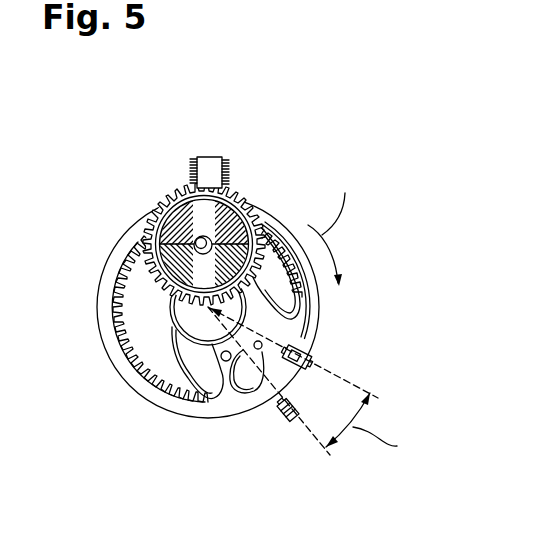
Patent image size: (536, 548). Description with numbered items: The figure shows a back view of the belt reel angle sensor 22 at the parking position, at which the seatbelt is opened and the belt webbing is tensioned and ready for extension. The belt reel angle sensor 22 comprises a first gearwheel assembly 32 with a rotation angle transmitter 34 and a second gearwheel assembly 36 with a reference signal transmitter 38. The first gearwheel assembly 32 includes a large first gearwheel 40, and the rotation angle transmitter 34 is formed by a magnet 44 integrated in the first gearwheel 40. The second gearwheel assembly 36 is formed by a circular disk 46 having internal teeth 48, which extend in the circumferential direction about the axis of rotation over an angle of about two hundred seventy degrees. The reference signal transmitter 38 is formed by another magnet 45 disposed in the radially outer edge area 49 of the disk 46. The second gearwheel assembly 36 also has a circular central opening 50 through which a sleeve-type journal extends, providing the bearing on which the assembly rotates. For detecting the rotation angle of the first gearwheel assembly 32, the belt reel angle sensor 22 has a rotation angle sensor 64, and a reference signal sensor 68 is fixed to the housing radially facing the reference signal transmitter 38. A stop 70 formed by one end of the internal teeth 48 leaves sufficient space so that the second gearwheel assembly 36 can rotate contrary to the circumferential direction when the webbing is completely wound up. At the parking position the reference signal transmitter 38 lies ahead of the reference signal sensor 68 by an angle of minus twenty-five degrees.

The belt reel angle sensor 22 is at (240, 295).
The first gearwheel assembly 32 is at (218, 200).
The rotation angle transmitter 34 is at (218, 195).
The magnet 44 is at (218, 195).
The second gearwheel assembly 36 is at (208, 358).
The reference signal transmitter 38 is at (357, 349).
The magnet 45 is at (357, 349).
The first gearwheel 40 is at (126, 295).
The circular disk 46 is at (173, 307).
The internal teeth 48 is at (286, 249).
The radially outer edge area 49 is at (163, 394).
The circular central opening 50 is at (154, 354).
The rotation angle sensor 64 is at (209, 142).
The reference signal sensor 68 is at (294, 458).
The stop 70 is at (318, 276).